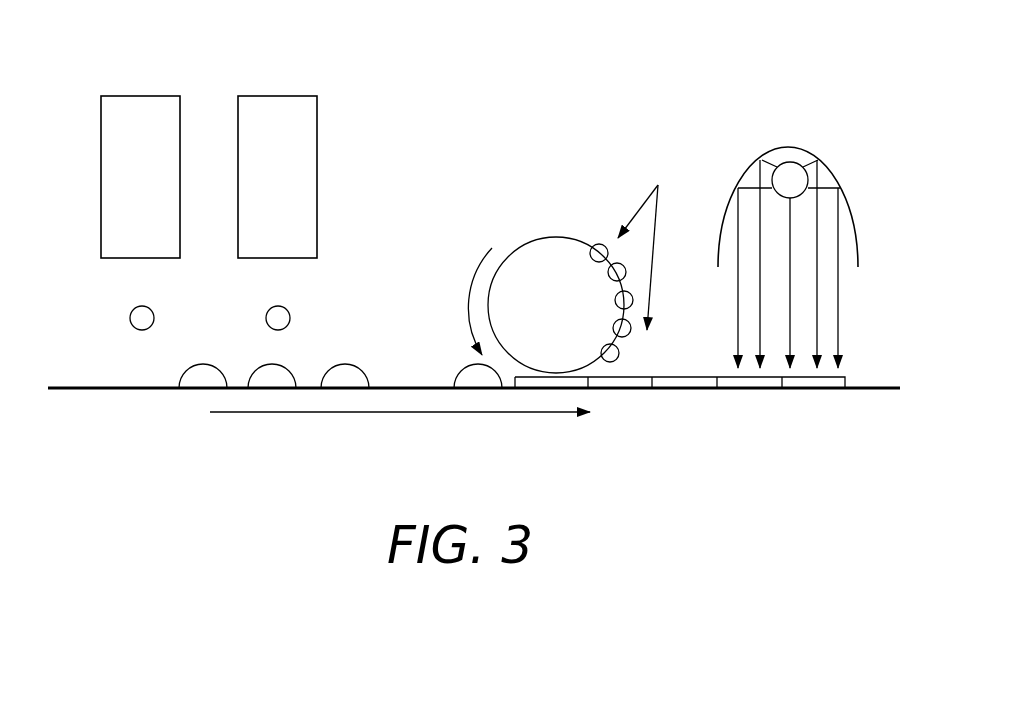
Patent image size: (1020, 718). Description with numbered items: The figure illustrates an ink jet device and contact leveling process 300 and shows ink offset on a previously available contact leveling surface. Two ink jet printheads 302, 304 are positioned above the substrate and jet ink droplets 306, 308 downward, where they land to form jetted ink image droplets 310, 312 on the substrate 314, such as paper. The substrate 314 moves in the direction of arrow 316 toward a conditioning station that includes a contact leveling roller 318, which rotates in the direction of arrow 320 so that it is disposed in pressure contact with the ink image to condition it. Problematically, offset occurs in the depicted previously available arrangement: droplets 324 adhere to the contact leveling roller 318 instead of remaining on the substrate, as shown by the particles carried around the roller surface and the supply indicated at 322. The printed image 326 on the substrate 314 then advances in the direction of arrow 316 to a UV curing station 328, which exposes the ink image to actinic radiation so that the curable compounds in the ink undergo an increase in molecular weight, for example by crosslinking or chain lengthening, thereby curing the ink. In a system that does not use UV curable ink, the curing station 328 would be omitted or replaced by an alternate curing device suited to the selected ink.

The ink jet device and contact leveling process 300 is at (712, 85).
The ink jet printhead 302 is at (123, 96).
The ink jet printhead 304 is at (267, 96).
The ink droplet 306 is at (129, 320).
The ink droplet 308 is at (270, 310).
The jetted ink image droplet 310 is at (187, 370).
The jetted ink image droplets 312 is at (343, 367).
The substrate 314 is at (167, 390).
The arrow 316 is at (407, 413).
The contact leveling roller 318 is at (533, 240).
The arrow 320 is at (468, 302).
The particles supply 322 is at (658, 215).
The droplets 324 is at (633, 300).
The printed image 326 is at (708, 373).
The UV curing station 328 is at (845, 202).